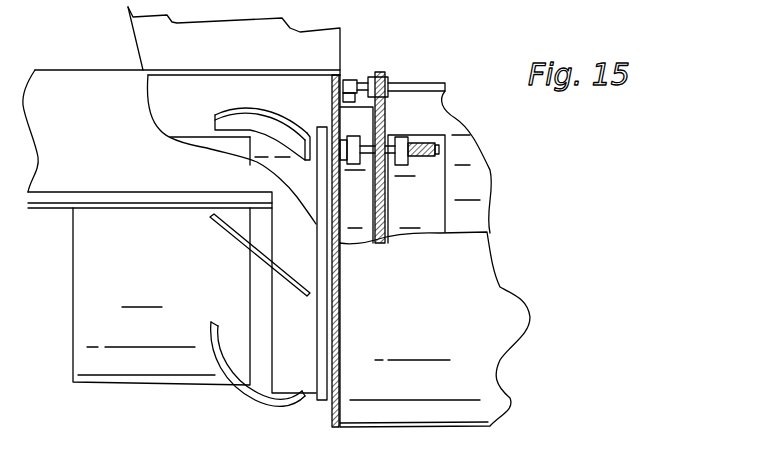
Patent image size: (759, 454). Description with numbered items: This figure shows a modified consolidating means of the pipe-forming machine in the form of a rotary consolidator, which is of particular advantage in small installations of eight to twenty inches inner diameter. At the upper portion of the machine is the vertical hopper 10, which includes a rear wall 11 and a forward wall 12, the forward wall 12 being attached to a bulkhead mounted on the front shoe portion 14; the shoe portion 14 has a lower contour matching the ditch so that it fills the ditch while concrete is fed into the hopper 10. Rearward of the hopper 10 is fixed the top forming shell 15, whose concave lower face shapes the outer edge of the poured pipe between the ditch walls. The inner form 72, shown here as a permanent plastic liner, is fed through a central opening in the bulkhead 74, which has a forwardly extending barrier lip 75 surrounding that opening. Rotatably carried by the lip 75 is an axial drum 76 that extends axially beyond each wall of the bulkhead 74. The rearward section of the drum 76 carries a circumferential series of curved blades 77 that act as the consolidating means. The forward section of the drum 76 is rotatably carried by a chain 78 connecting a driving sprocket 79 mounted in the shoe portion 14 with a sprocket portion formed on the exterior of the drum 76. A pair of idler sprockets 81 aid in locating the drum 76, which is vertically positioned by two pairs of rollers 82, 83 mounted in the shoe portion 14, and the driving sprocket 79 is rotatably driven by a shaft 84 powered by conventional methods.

The vertical hopper 10 is at (243, 56).
The rear wall 11 is at (134, 40).
The forward wall 12 is at (341, 47).
The front shoe portion 14 is at (445, 316).
The top forming shell 15 is at (95, 123).
The form 72 is at (160, 275).
The bulkhead 74 is at (330, 418).
The barrier lip 75 is at (316, 337).
The axial drum 76 is at (426, 200).
The curved blades 77 is at (217, 118).
The chain 78 is at (378, 200).
The driving sprocket 79 is at (385, 78).
The idler sprockets 81 is at (384, 146).
The rollers 82 is at (361, 137).
The rollers 83 is at (408, 140).
The shaft 84 is at (425, 86).